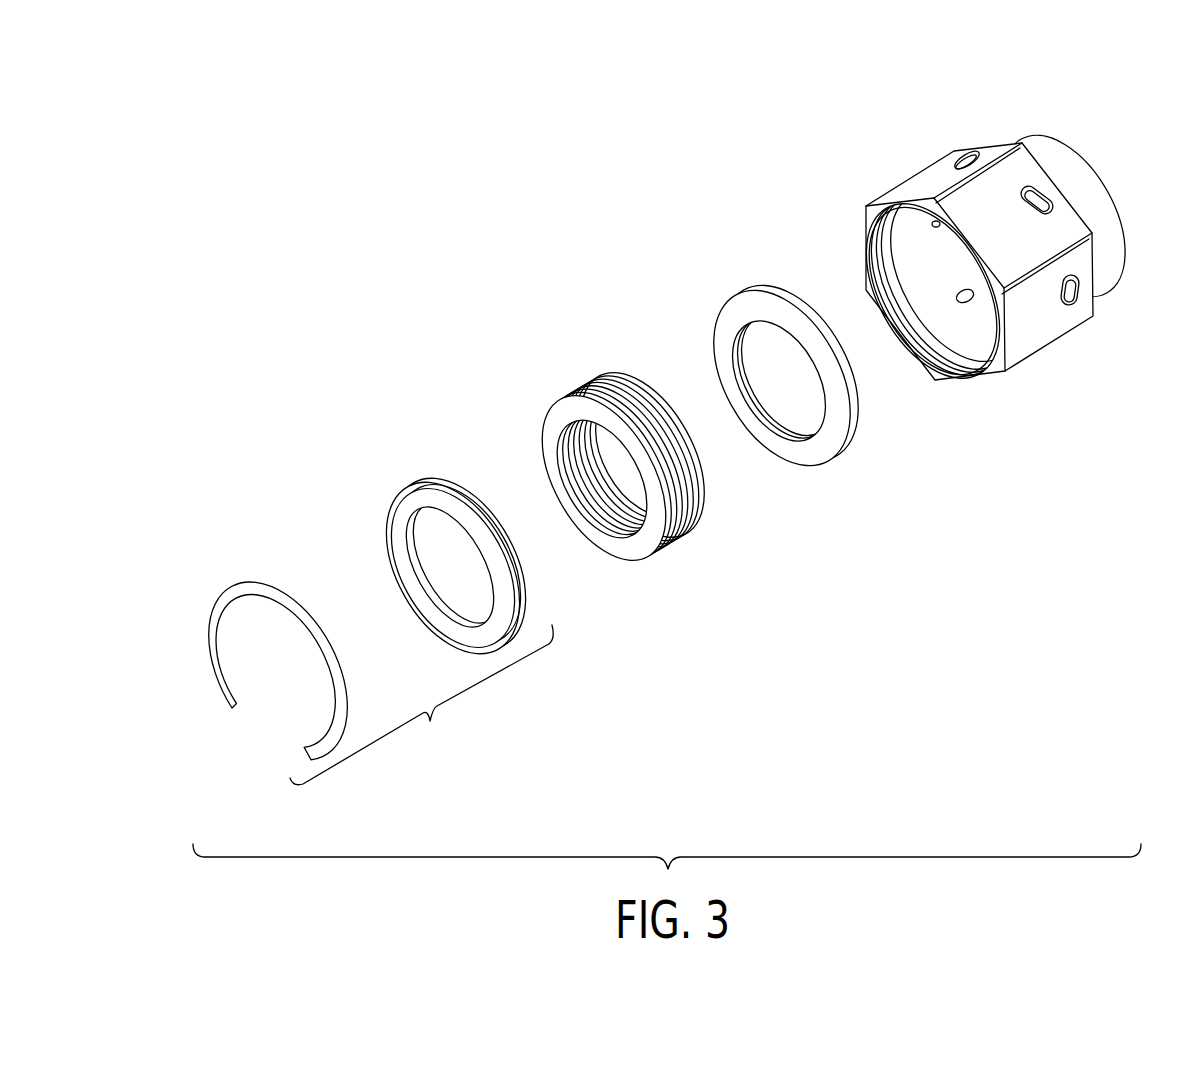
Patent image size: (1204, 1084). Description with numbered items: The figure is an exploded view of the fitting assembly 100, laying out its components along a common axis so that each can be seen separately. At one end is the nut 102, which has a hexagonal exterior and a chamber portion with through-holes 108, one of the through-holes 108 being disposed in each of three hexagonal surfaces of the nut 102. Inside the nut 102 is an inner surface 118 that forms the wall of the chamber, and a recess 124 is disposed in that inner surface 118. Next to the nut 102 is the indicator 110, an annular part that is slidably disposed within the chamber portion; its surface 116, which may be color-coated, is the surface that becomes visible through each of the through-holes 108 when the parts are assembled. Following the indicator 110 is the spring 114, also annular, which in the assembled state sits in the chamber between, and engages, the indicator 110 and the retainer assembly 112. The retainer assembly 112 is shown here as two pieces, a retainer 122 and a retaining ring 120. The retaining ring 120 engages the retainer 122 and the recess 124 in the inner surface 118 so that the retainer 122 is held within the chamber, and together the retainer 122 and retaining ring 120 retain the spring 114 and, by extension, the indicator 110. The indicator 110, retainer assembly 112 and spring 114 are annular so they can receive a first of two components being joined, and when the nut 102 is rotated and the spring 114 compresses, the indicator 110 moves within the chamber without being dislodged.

The fitting assembly 100 is at (256, 136).
The nut 102 is at (995, 248).
The through-holes 108 is at (966, 153).
The indicator 110 is at (786, 375).
The retainer assembly 112 is at (421, 705).
The spring 114 is at (595, 387).
The surface 116 is at (842, 430).
The inner surface 118 is at (977, 353).
The retaining ring 120 is at (252, 590).
The retainer 122 is at (410, 498).
The recess 124 is at (913, 327).